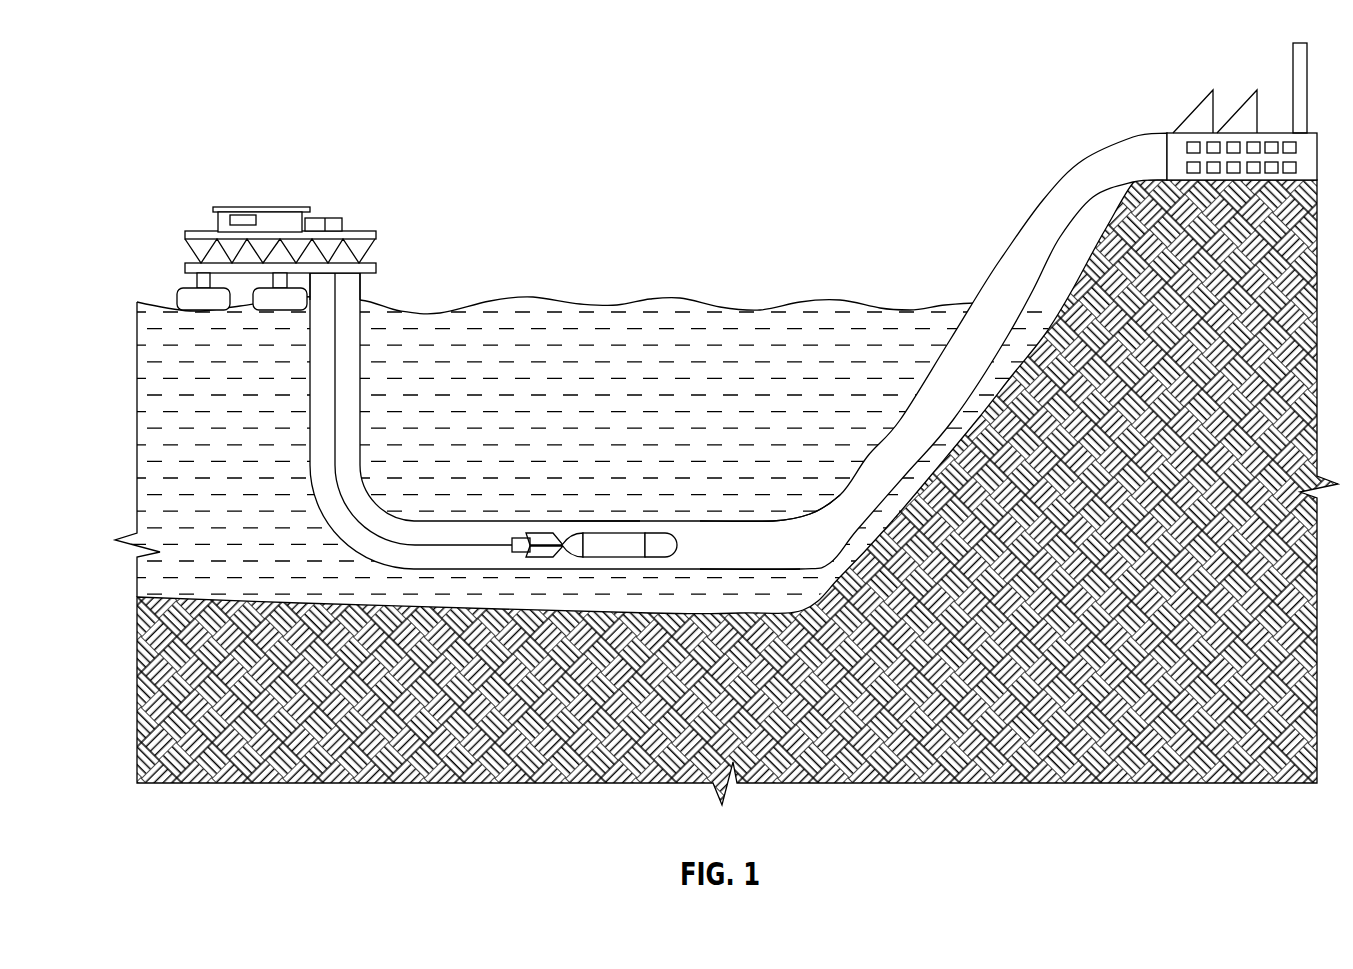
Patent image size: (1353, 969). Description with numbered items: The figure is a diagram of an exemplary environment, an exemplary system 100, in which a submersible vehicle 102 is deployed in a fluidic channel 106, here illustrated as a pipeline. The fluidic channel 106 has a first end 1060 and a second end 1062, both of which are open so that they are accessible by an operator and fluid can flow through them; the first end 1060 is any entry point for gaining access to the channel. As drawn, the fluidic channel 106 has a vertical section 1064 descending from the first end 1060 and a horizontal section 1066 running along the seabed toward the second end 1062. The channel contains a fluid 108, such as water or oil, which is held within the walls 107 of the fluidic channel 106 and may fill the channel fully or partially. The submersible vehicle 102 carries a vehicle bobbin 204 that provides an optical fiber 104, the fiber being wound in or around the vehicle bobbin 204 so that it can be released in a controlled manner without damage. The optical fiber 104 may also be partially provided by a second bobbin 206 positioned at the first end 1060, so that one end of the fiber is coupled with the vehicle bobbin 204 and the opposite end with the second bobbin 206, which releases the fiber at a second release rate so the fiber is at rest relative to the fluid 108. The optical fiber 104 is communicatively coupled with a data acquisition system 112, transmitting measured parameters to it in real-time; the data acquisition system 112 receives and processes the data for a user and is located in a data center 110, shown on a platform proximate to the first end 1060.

The system 100 is at (227, 66).
The submersible vehicle 102 is at (663, 532).
The optical fiber 104 is at (511, 537).
The fluidic channel 106 is at (372, 498).
The walls 107 is at (726, 512).
The fluid 108 is at (788, 536).
The data center 110 is at (270, 206).
The data acquisition system 112 is at (217, 216).
The vehicle bobbin 204 is at (519, 553).
The second bobbin 206 is at (345, 224).
The first end 1060 is at (345, 285).
The second end 1062 is at (1162, 142).
The vertical section 1064 is at (368, 412).
The horizontal section 1066 is at (602, 496).